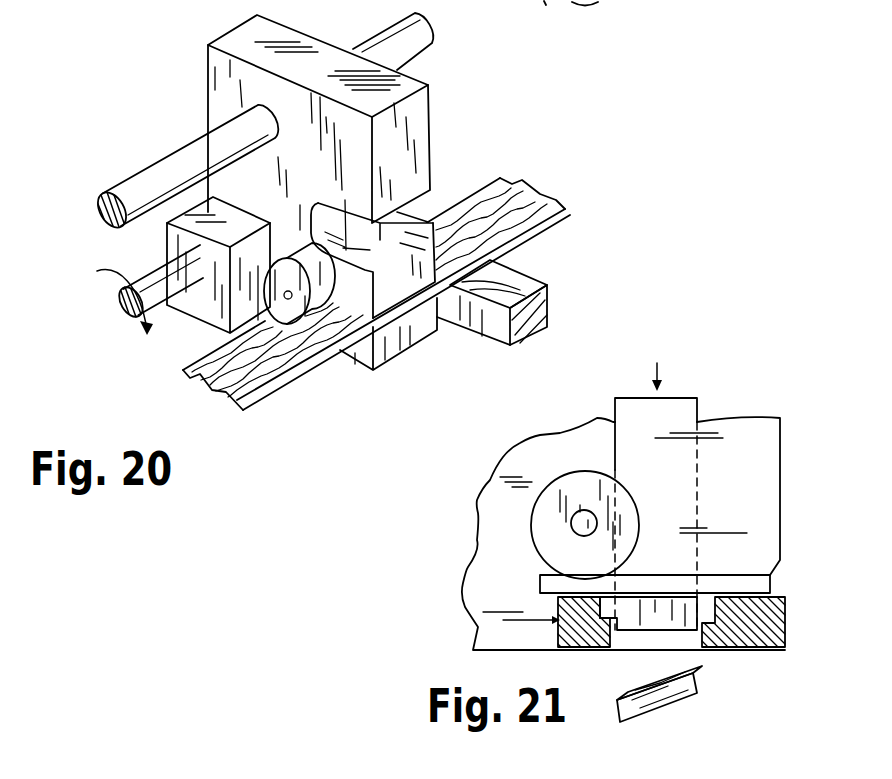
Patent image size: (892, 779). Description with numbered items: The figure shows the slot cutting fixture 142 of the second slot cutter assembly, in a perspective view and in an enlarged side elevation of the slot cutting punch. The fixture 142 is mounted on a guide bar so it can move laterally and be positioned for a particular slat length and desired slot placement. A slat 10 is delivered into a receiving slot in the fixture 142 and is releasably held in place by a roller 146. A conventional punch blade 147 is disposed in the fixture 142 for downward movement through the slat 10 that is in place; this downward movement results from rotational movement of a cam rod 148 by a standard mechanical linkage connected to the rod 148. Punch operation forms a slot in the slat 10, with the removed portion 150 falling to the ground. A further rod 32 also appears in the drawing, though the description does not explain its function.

In FIG. 20, the slat 10 is at (304, 355).
In FIG. 21, the slat 10 is at (553, 588).
In FIG. 20, the rod 32 is at (157, 173).
In FIG. 20, the slot cutting fixture 142 is at (217, 77).
In FIG. 20, the roller 146 is at (200, 358).
In FIG. 21, the roller 146 is at (573, 477).
In FIG. 20, the punch blade 147 is at (428, 220).
In FIG. 21, the punch blade 147 is at (688, 408).
In FIG. 20, the cam rod 148 is at (133, 287).
In FIG. 21, the removed portion 150 is at (702, 677).